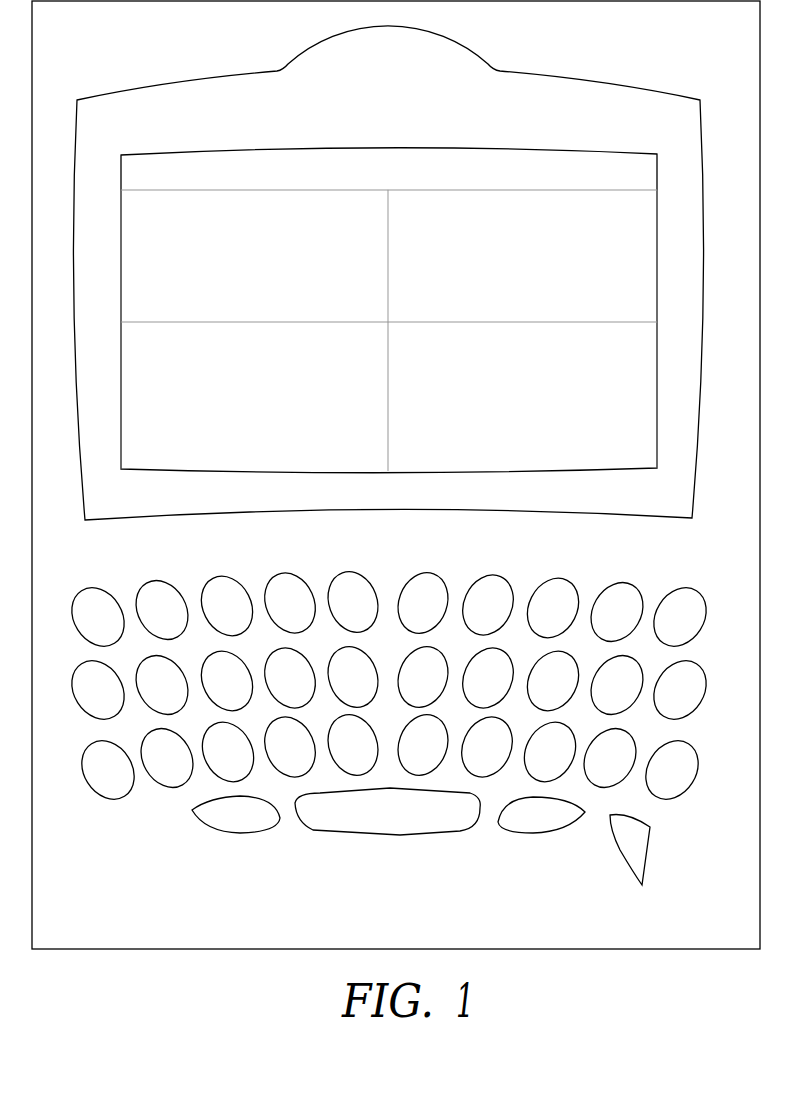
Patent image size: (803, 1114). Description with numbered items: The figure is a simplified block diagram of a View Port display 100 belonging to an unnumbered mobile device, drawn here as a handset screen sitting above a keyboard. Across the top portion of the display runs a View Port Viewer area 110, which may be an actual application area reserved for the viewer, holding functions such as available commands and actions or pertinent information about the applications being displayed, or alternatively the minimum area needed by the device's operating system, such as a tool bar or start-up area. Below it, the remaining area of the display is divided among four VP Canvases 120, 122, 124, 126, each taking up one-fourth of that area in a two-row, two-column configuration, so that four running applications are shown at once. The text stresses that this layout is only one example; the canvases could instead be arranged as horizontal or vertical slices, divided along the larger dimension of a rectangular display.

The View Port display 100 is at (597, 152).
The View Port Viewer area 110 is at (512, 181).
The VP Canvas 120 is at (262, 268).
The VP Canvas 122 is at (535, 266).
The VP Canvas 124 is at (262, 417).
The VP Canvas 126 is at (535, 417).